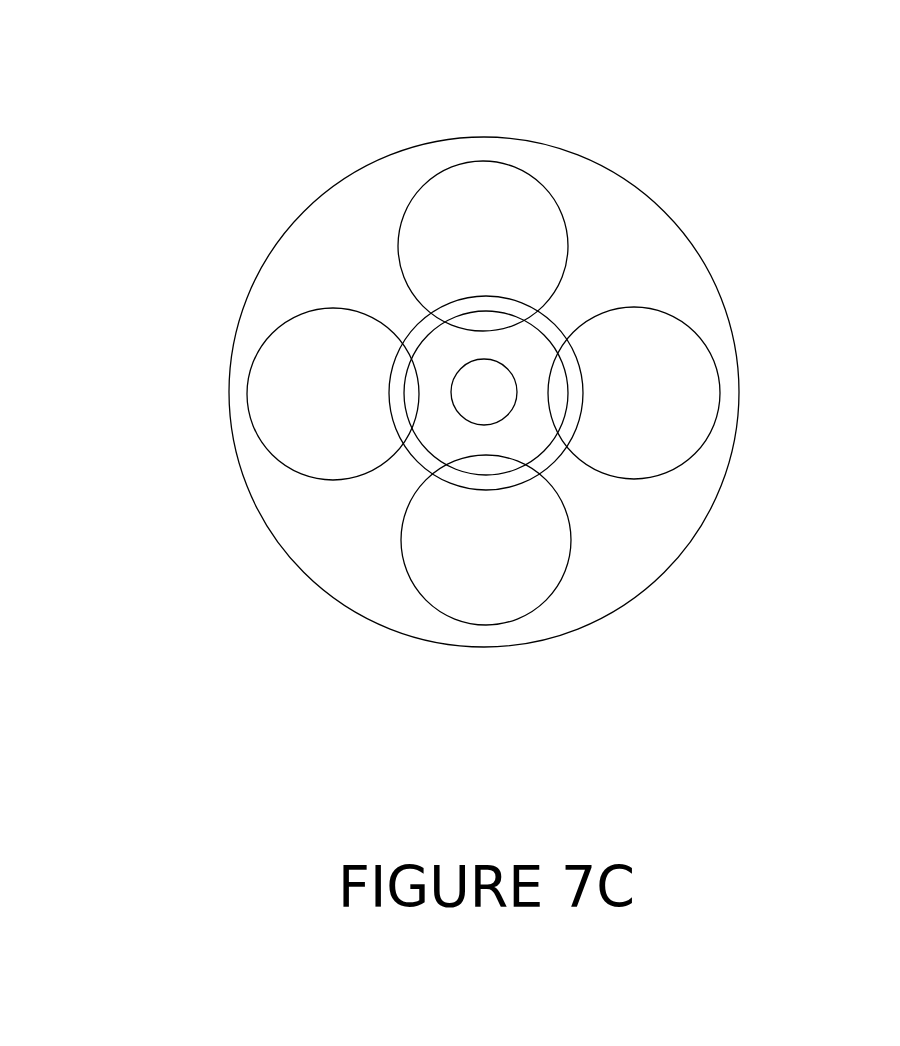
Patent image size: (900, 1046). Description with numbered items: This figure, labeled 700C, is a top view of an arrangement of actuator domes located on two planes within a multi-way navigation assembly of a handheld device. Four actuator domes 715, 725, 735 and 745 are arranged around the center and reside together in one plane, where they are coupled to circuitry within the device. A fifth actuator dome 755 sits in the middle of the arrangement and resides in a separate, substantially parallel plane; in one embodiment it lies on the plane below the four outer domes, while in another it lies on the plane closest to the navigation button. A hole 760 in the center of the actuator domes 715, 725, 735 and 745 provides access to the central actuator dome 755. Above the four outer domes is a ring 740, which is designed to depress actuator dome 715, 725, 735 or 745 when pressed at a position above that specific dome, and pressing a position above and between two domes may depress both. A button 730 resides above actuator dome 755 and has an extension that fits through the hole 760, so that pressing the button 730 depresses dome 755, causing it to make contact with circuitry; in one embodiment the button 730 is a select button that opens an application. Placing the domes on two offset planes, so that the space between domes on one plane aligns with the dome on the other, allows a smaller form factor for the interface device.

The optical coupling assembly (cross-section) 700C is at (83, 40).
The ring 740 is at (740, 347).
The actuator dome 755 is at (545, 327).
The button 730 is at (562, 465).
The hole 760 is at (455, 365).
The actuator dome 715 is at (486, 540).
The actuator dome 725 is at (333, 394).
The actuator dome 735 is at (483, 246).
The actuator dome 745 is at (634, 393).